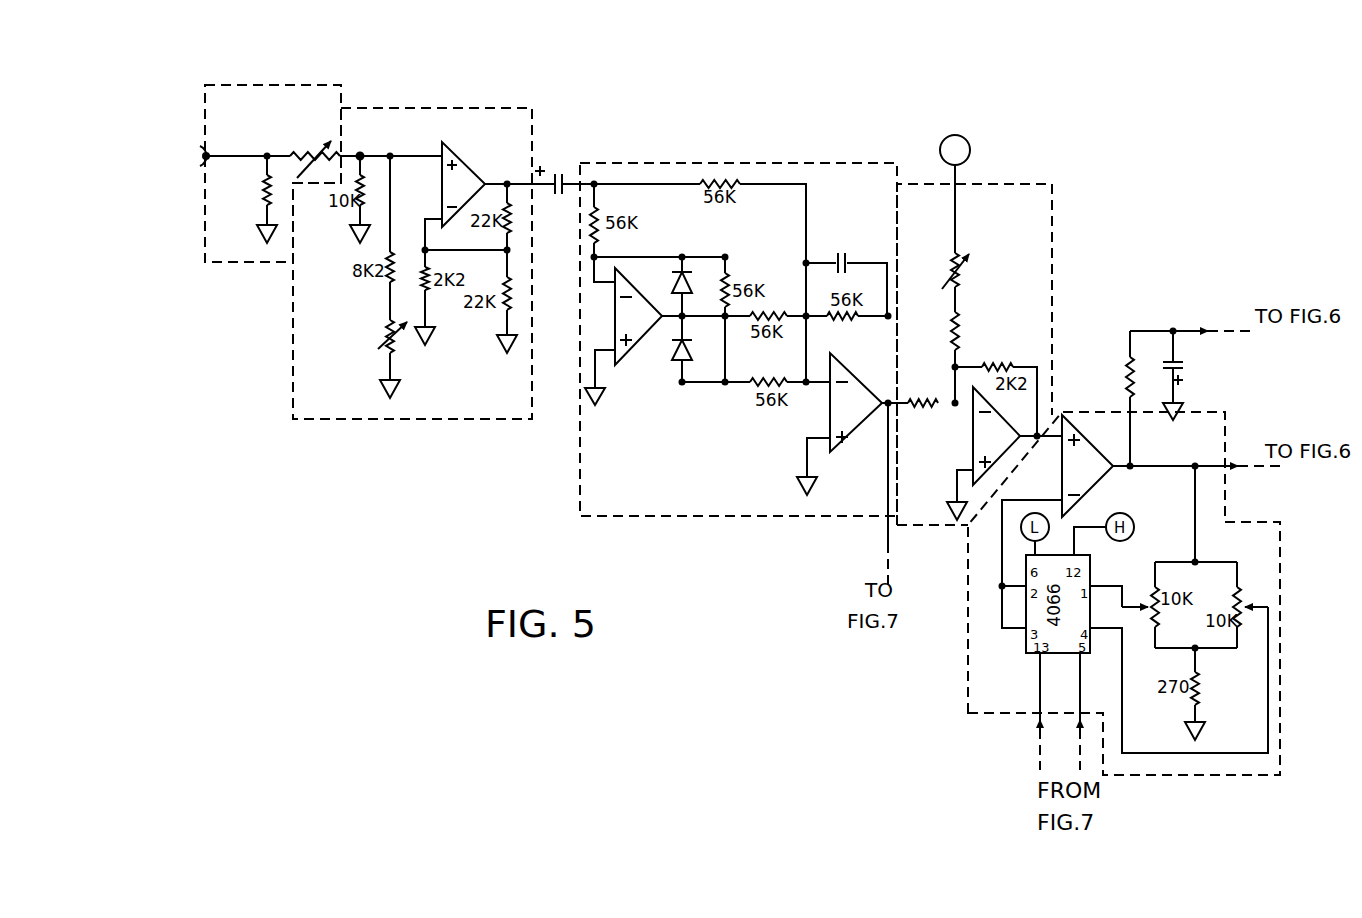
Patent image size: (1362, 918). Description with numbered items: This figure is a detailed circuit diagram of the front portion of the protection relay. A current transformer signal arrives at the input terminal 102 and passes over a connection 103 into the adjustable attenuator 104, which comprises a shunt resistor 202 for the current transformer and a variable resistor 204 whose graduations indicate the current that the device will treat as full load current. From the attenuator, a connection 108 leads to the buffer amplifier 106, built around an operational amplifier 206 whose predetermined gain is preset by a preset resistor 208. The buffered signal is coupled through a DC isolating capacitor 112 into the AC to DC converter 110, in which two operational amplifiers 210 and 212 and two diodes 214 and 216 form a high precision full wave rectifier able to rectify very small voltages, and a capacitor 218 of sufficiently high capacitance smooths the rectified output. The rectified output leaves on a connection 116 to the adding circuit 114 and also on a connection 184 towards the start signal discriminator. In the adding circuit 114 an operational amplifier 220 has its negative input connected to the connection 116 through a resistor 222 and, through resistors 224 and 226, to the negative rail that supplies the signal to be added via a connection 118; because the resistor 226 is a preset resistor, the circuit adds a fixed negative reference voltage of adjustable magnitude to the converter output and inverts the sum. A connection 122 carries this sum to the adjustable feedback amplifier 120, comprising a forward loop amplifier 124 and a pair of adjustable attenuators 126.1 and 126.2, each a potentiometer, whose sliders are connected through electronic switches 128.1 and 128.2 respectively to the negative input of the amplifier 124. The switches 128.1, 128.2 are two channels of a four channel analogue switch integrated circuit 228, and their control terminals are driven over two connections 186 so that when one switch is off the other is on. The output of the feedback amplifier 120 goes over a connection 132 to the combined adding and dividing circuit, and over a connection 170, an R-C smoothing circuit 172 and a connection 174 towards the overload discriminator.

The input terminal 102 is at (198, 161).
The connection 103 is at (240, 155).
The adjustable attenuator 104 is at (302, 83).
The buffer amplifier 106 is at (478, 107).
The connection 108 is at (356, 154).
The AC to DC converter 110 is at (821, 127).
The DC isolating capacitor 112 is at (561, 196).
The adding circuit 114 is at (997, 182).
The connection 116 is at (889, 410).
The connection 118 is at (966, 172).
The adjustable feedback amplifier 120 is at (965, 688).
The connection 122 is at (1060, 412).
The forward loop amplifier 124 is at (1098, 480).
The adjustable attenuator 126.1 is at (1255, 592).
The adjustable attenuator 126.2 is at (1145, 598).
The electronic switch 128.1 is at (995, 592).
The electronic switch 128.2 is at (973, 606).
The connection 132 is at (1241, 470).
The connection 170 is at (1131, 441).
The R-C smoothing circuit 172 is at (1150, 326).
The connection 174 is at (1176, 328).
The connection 184 is at (887, 500).
The connections 186 is at (1076, 699).
The shunt resistor 202 is at (262, 208).
The variable resistor 204 is at (322, 170).
The operational amplifier 206 is at (465, 165).
The preset resistor 208 is at (395, 344).
The operational amplifier 210 is at (645, 334).
The operational amplifier 212 is at (829, 414).
The diode 214 is at (694, 360).
The diode 216 is at (697, 284).
The capacitor 218 is at (805, 265).
The operational amplifier 220 is at (972, 443).
The resistor 222 is at (937, 398).
The resistor 224 is at (952, 329).
The preset resistor 226 is at (952, 263).
The four channel analogue switch integrated circuit 228 is at (1029, 656).